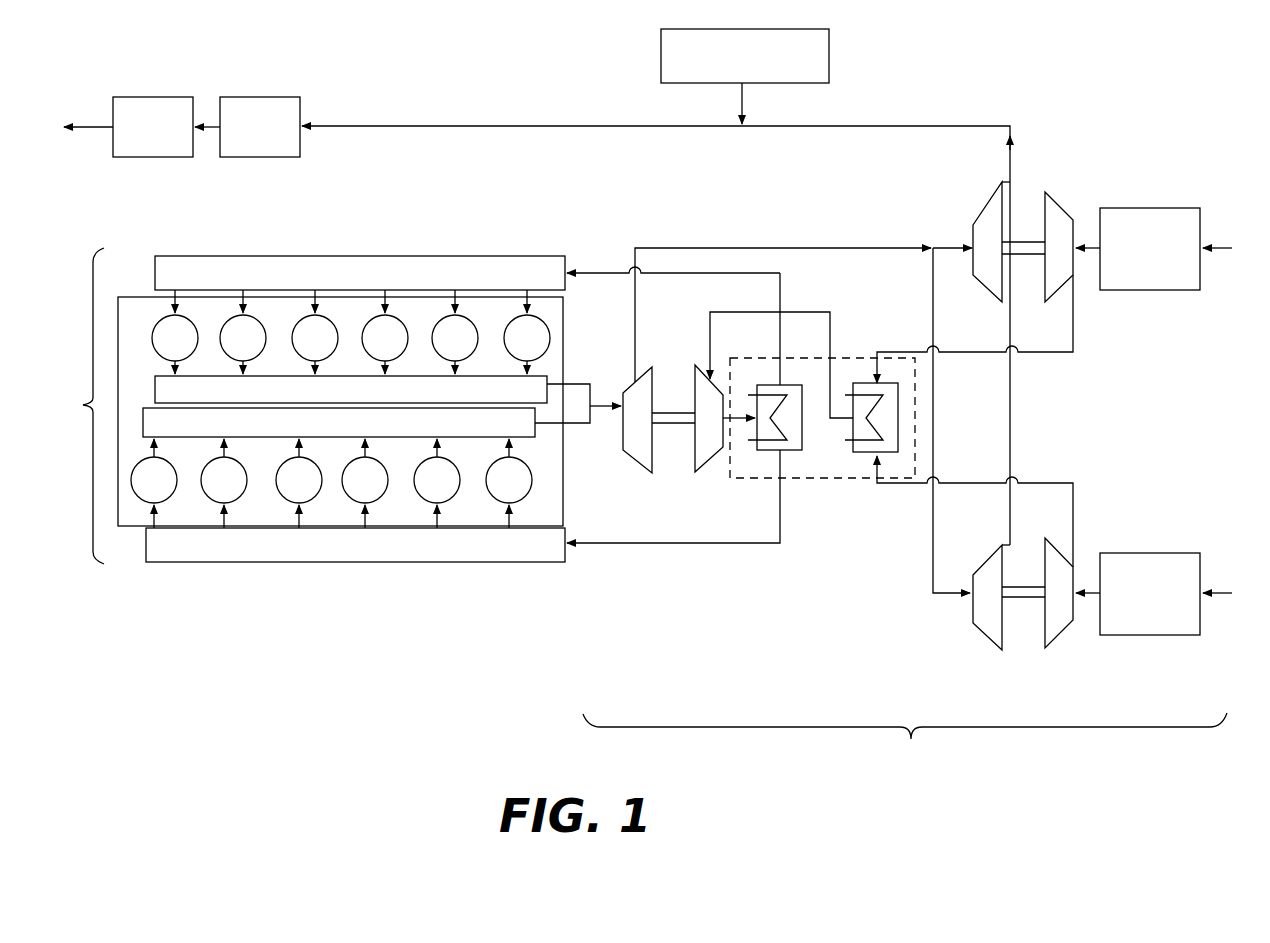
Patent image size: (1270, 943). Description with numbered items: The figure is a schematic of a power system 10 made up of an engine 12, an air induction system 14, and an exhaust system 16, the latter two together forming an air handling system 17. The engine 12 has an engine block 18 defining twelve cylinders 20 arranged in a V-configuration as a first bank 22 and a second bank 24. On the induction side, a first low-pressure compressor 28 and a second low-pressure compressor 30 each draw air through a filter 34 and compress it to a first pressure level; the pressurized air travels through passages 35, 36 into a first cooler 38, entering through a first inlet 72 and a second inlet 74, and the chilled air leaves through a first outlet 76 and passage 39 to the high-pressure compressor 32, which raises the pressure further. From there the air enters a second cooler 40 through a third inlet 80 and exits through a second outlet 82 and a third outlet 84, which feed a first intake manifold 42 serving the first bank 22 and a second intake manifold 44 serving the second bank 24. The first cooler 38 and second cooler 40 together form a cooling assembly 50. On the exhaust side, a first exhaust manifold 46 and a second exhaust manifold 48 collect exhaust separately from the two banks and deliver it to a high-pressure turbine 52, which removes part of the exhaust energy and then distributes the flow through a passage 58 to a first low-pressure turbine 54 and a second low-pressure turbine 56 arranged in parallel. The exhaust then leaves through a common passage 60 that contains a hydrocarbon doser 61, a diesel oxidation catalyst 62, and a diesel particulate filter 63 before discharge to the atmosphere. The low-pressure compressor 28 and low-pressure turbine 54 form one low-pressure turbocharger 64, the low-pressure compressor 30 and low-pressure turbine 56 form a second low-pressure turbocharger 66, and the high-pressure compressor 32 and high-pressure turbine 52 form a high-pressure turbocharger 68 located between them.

The power system 10 is at (1010, 54).
The engine 12 is at (64, 406).
The air induction system 14 is at (672, 576).
The exhaust system 16 is at (852, 192).
The air handling system 17 is at (905, 746).
The engine block 18 is at (149, 324).
The cylinders 20 is at (164, 349).
The first bank 22 is at (572, 328).
The second bank 24 is at (553, 468).
The first low-pressure compressor 28 is at (1058, 302).
The second low-pressure compressor 30 is at (1058, 648).
The high-pressure compressor 32 is at (698, 470).
The filter 34 is at (1135, 292).
The passage 35 is at (1022, 355).
The passage 36 is at (975, 486).
The first cooler 38 is at (936, 397).
The passage 39 is at (708, 330).
The second cooler 40 is at (800, 452).
The first intake manifold 42 is at (333, 284).
The second intake manifold 44 is at (338, 556).
The first exhaust manifold 46 is at (333, 401).
The second exhaust manifold 48 is at (321, 434).
The cooling assembly 50 is at (948, 436).
The high-pressure turbine 52 is at (644, 467).
The first low-pressure turbine 54 is at (975, 318).
The second low-pressure turbine 56 is at (987, 650).
The passage 58 is at (682, 246).
The common passage 60 is at (1012, 150).
The hydrocarbon doser 61 is at (829, 50).
The diesel oxidation catalyst 62 is at (253, 96).
The diesel particulate filter 63 is at (147, 96).
The low-pressure turbocharger 64 is at (1052, 245).
The low-pressure turbocharger 66 is at (1050, 585).
The high-pressure turbocharger 68 is at (667, 451).
The first inlet 72 is at (877, 348).
The second inlet 74 is at (877, 492).
The first outlet 76 is at (833, 355).
The third inlet 80 is at (735, 385).
The second outlet 82 is at (782, 327).
The third outlet 84 is at (780, 485).